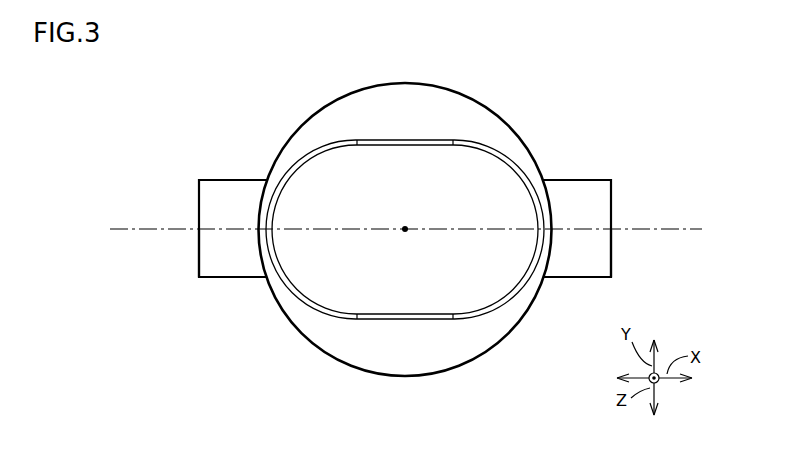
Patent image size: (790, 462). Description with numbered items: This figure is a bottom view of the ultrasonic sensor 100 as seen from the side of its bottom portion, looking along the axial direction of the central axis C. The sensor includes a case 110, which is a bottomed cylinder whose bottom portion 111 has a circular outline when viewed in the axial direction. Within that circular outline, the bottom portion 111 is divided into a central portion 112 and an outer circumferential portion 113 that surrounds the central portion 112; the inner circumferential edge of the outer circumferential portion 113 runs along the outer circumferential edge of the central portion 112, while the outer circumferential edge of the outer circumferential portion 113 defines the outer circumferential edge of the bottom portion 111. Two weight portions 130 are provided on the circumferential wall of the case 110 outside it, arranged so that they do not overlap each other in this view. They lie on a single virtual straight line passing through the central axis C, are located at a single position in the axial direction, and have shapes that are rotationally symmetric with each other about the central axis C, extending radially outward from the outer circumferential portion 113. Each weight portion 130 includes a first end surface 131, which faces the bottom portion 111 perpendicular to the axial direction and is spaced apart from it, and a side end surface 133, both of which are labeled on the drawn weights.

The ultrasonic sensor 100 is at (647, 124).
The case 110 is at (403, 95).
The bottom portion 111 is at (460, 341).
The central portion 112 is at (416, 283).
The outer circumferential portion 113 is at (363, 119).
The weight portion 130 is at (212, 206).
The first end surface 131 is at (598, 203).
The side end surface 133 is at (200, 262).
The central axis C is at (403, 232).